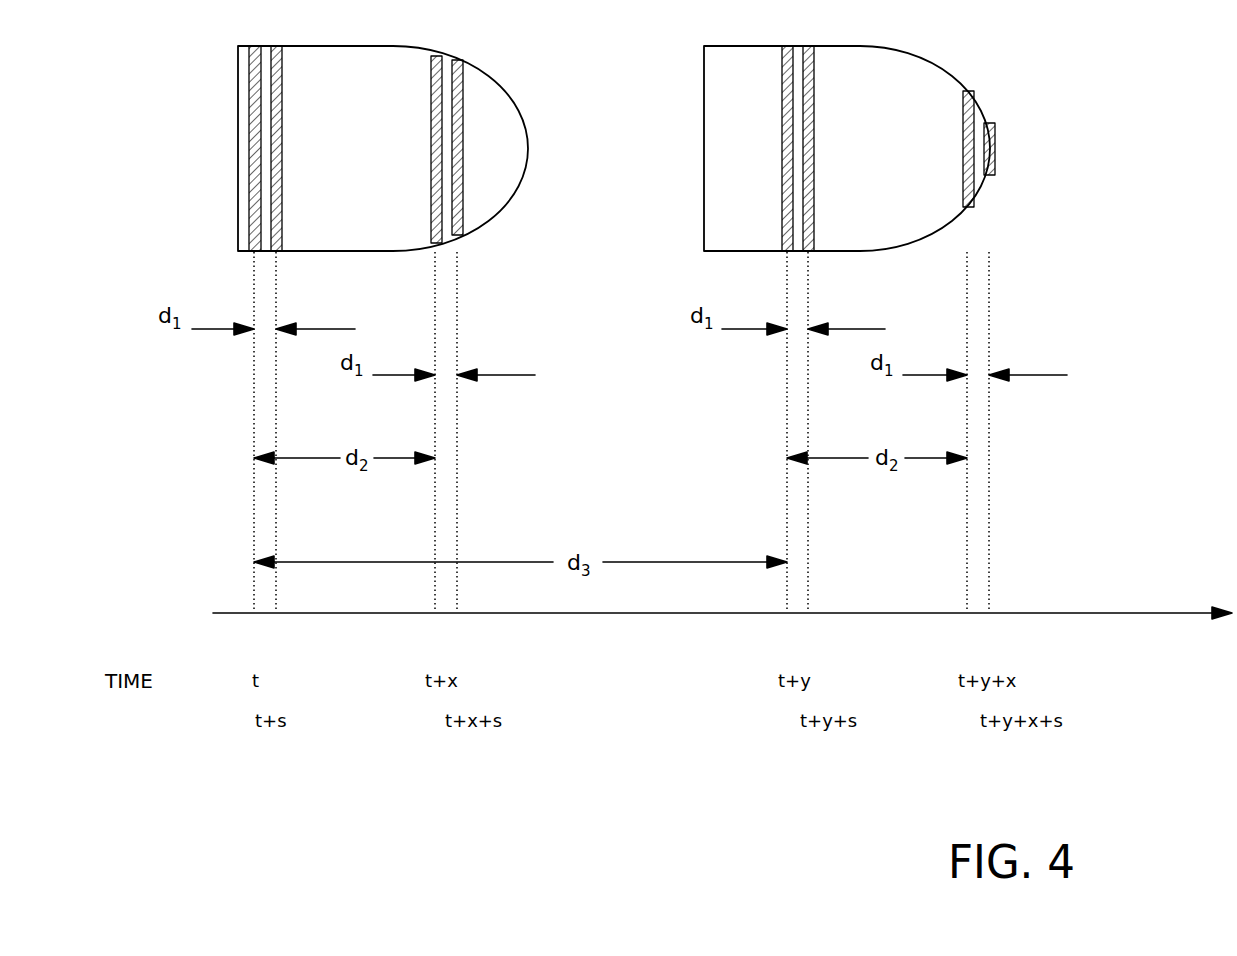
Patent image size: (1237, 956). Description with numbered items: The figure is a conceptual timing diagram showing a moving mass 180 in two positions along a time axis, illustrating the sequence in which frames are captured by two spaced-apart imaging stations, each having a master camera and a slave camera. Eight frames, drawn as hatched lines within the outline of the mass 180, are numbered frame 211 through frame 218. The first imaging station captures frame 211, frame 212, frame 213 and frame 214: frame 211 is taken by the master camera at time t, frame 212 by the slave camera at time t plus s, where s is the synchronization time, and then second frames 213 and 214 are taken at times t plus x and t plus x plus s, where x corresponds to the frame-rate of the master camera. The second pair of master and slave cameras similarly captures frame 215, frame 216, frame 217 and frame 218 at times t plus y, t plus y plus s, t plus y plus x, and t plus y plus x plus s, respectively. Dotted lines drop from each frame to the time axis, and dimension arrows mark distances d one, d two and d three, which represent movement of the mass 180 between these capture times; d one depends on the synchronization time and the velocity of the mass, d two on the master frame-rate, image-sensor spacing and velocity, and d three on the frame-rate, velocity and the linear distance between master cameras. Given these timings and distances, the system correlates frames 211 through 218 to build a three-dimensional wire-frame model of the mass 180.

The mass 180 is at (497, 84).
The frame 211 is at (245, 179).
The frame 212 is at (273, 132).
The frame 213 is at (438, 226).
The frame 214 is at (462, 177).
The frame 215 is at (777, 190).
The frame 216 is at (802, 142).
The frame 217 is at (975, 188).
The frame 218 is at (997, 140).